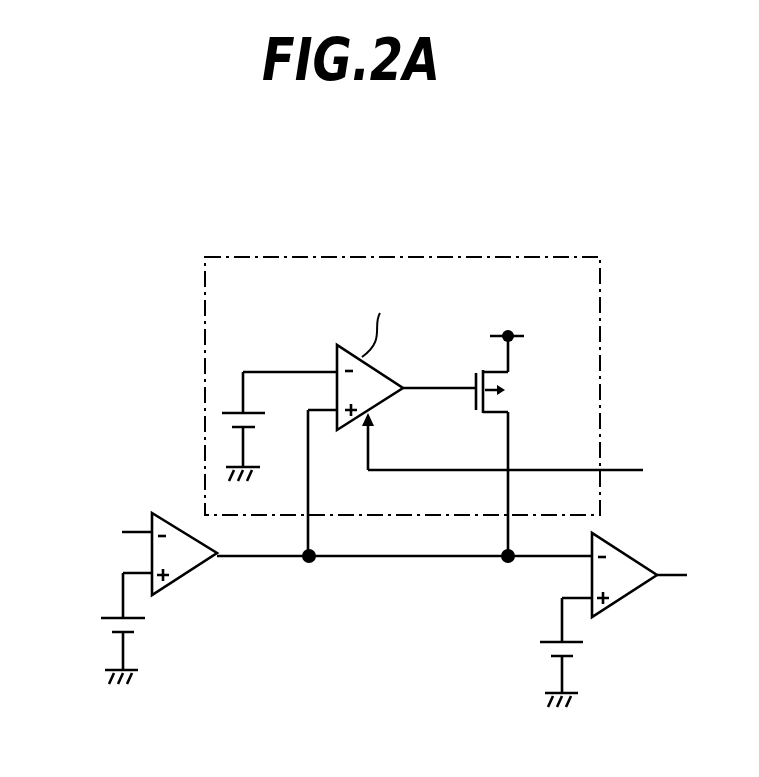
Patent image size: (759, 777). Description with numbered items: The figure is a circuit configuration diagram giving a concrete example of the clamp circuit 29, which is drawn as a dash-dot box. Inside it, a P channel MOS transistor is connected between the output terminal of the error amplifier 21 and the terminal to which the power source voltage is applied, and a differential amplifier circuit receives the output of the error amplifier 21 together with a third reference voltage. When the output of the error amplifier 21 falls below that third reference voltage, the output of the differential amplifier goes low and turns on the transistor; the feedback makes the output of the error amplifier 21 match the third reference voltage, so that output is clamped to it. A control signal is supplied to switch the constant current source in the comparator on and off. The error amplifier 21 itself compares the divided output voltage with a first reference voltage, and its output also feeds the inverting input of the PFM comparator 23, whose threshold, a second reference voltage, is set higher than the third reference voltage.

The clamp circuit 29 is at (463, 257).
The error amplifier 21 is at (185, 575).
The PFM comparator 23 is at (628, 593).